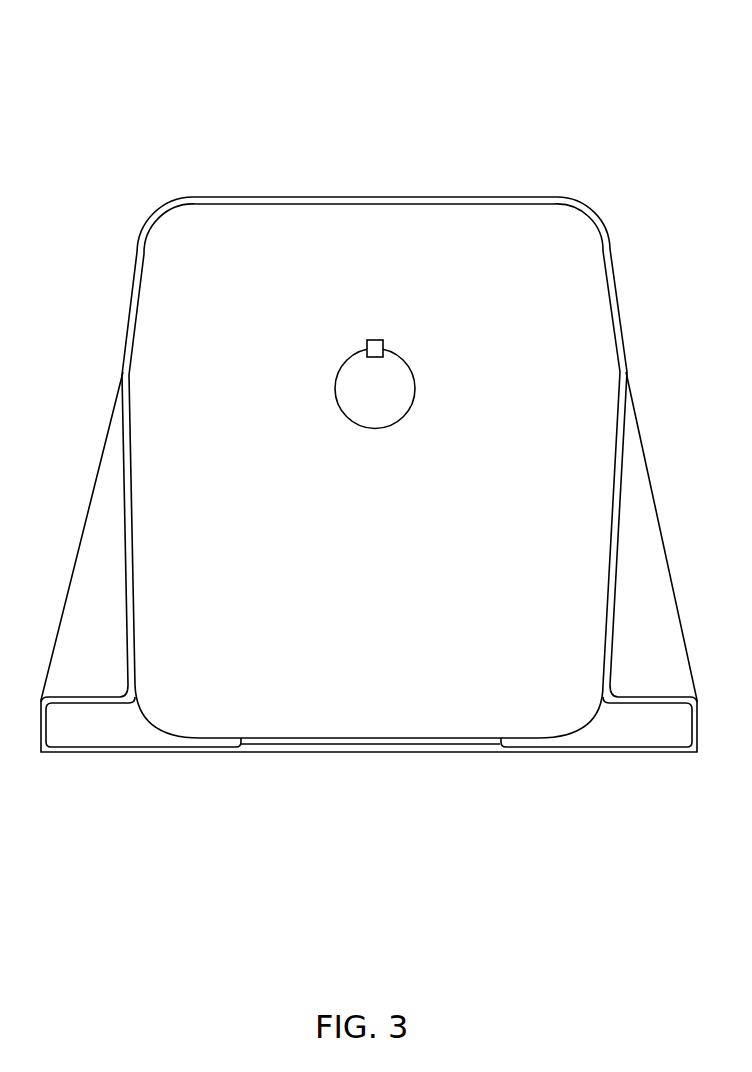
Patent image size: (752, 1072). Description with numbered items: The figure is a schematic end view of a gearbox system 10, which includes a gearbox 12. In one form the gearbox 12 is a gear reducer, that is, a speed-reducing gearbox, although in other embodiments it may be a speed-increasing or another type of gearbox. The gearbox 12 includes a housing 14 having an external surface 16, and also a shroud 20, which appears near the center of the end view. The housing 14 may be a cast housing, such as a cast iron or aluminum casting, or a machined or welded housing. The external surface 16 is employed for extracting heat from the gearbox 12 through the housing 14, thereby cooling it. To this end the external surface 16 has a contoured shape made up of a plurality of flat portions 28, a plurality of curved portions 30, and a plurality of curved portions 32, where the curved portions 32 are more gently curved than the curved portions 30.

The gearbox system 10 is at (369, 389).
The gearbox 12 is at (374, 497).
The housing 14 is at (373, 157).
The external surface 16 is at (369, 430).
The shroud 20 is at (335, 381).
The flat portions 28 is at (386, 196).
The curved portions 30 is at (153, 212).
The curved portions 32 is at (128, 615).